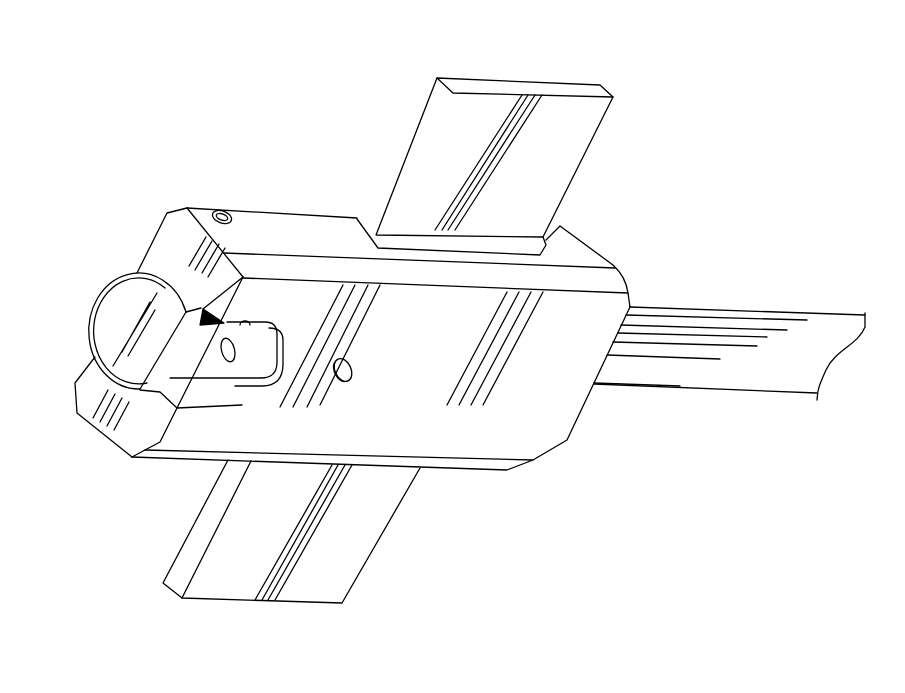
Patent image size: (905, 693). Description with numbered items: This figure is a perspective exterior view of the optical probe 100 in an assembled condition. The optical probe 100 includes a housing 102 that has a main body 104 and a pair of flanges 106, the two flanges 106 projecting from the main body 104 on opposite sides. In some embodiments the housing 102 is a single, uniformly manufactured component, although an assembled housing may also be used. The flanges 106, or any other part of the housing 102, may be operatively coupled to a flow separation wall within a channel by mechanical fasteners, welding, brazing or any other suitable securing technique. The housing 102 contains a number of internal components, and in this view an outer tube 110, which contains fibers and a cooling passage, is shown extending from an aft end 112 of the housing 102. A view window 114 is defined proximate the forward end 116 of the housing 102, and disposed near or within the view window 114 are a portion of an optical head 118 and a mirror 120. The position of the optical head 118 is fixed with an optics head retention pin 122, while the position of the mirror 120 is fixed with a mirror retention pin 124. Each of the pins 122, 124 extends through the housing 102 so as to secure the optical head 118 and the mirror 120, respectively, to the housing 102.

The optical probe 100 is at (214, 107).
The housing 102 is at (601, 231).
The main body 104 is at (528, 428).
The flanges 106 is at (557, 107).
The outer tube 110 is at (823, 333).
The aft end 112 is at (583, 413).
The view window 114 is at (213, 400).
The forward end 116 is at (123, 427).
The optical head 118 is at (263, 322).
The mirror 120 is at (110, 313).
The optics head retention pin 122 is at (350, 366).
The mirror retention pin 124 is at (226, 210).